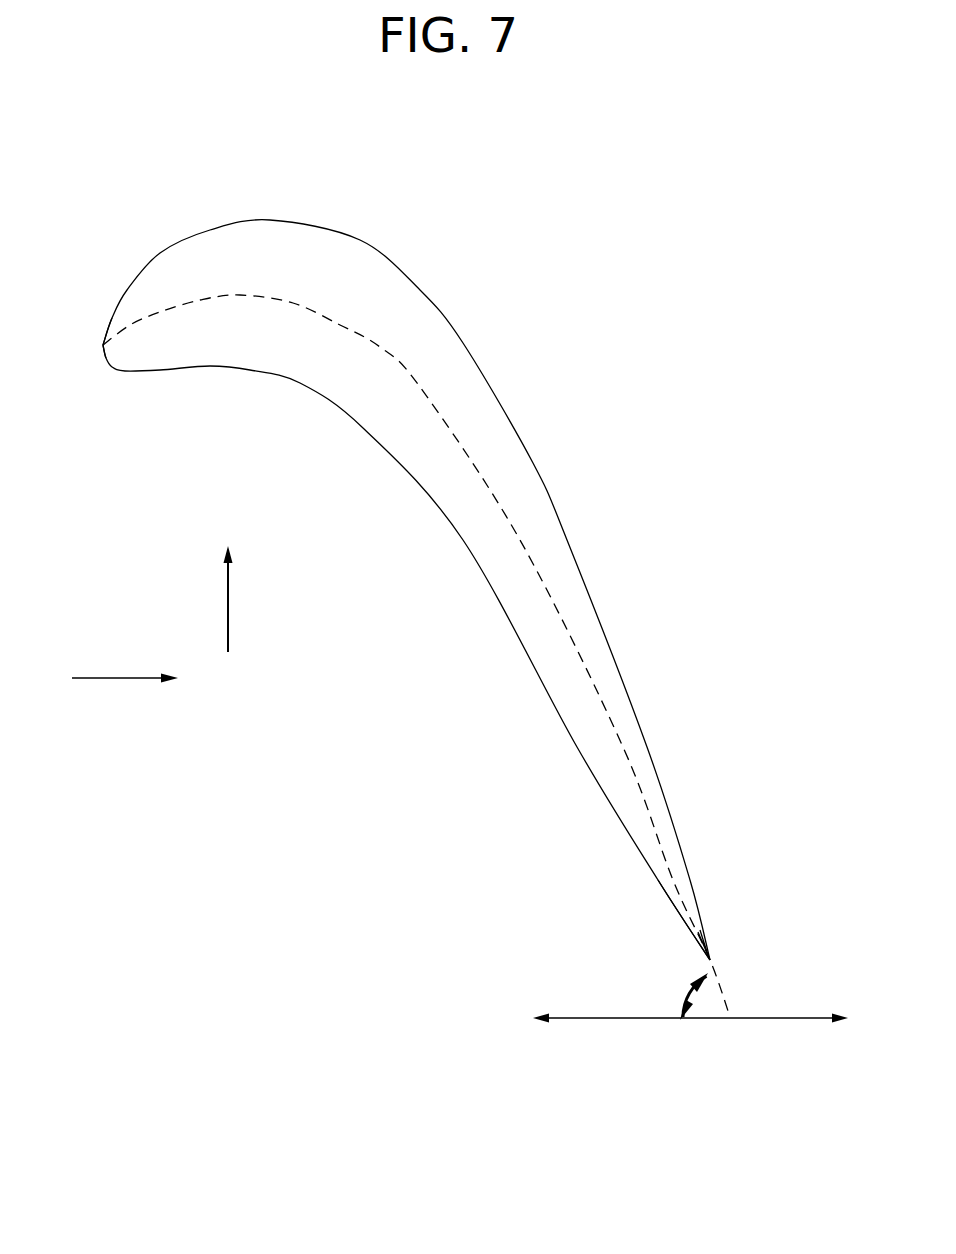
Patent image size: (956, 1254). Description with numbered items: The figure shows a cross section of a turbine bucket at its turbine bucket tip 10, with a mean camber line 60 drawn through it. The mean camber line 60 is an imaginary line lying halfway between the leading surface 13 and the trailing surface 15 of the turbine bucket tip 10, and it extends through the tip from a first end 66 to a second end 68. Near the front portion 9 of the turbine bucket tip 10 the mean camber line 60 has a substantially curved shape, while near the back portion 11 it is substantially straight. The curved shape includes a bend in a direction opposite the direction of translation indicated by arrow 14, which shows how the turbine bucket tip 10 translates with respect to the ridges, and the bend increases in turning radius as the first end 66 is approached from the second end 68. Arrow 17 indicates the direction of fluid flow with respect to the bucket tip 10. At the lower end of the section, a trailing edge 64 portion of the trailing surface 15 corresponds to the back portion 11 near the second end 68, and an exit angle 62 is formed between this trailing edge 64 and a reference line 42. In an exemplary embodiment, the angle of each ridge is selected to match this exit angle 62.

The front portion 9 is at (439, 547).
The turbine bucket tip 10 is at (406, 538).
The back portion 11 is at (421, 652).
The leading surface 13 is at (270, 220).
The trailing surface 15 is at (363, 428).
The arrow indicating direction of translation 14 is at (230, 597).
The arrow indicating direction of fluid flow 17 is at (125, 678).
The reference line 42 is at (635, 1018).
The mean camber line 60 is at (423, 387).
The exit angle 62 is at (687, 988).
The trailing edge 64 is at (677, 917).
The first end 66 is at (108, 337).
The second end 68 is at (712, 962).